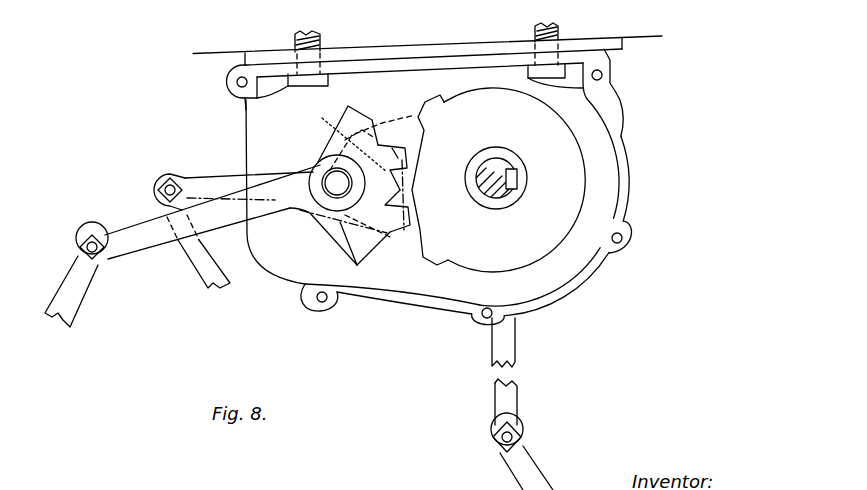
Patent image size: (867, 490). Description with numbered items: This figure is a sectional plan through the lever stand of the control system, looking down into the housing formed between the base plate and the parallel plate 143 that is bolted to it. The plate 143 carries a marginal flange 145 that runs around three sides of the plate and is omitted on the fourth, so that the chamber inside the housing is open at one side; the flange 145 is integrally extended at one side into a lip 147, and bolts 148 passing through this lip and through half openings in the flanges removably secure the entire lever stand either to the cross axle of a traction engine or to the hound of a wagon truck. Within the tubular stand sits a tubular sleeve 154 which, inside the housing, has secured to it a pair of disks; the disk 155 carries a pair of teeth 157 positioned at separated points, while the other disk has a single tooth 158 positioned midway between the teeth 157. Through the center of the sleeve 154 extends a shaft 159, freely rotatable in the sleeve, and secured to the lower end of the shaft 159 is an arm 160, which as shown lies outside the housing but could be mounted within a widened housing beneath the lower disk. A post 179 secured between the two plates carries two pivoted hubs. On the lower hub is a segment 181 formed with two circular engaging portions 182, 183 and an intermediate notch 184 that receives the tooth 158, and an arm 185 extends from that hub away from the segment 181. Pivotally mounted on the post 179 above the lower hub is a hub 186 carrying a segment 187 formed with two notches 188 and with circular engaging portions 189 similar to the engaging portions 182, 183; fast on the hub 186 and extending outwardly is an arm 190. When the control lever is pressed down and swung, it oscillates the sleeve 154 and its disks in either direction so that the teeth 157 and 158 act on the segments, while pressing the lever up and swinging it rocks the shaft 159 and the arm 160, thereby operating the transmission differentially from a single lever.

The plate 143 is at (603, 212).
The marginal flange 145 is at (627, 137).
The lip 147 is at (505, 44).
The bolts 148 is at (257, 98).
The tubular sleeve 154 is at (510, 163).
The disk 155 is at (575, 172).
The teeth 157 is at (432, 103).
The tooth 158 is at (340, 211).
The shaft 159 is at (515, 205).
The arm 160 is at (518, 342).
The post 179 is at (270, 168).
The segment 181 is at (362, 130).
The circular engaging portion 182 is at (398, 150).
The circular engaging portion 183 is at (403, 227).
The notch 184 is at (340, 135).
The arm 185 is at (217, 177).
The hub 186 is at (318, 175).
The segment 187 is at (353, 242).
The notches 188 is at (390, 153).
The circular engaging portions 189 is at (362, 128).
The arm 190 is at (130, 247).